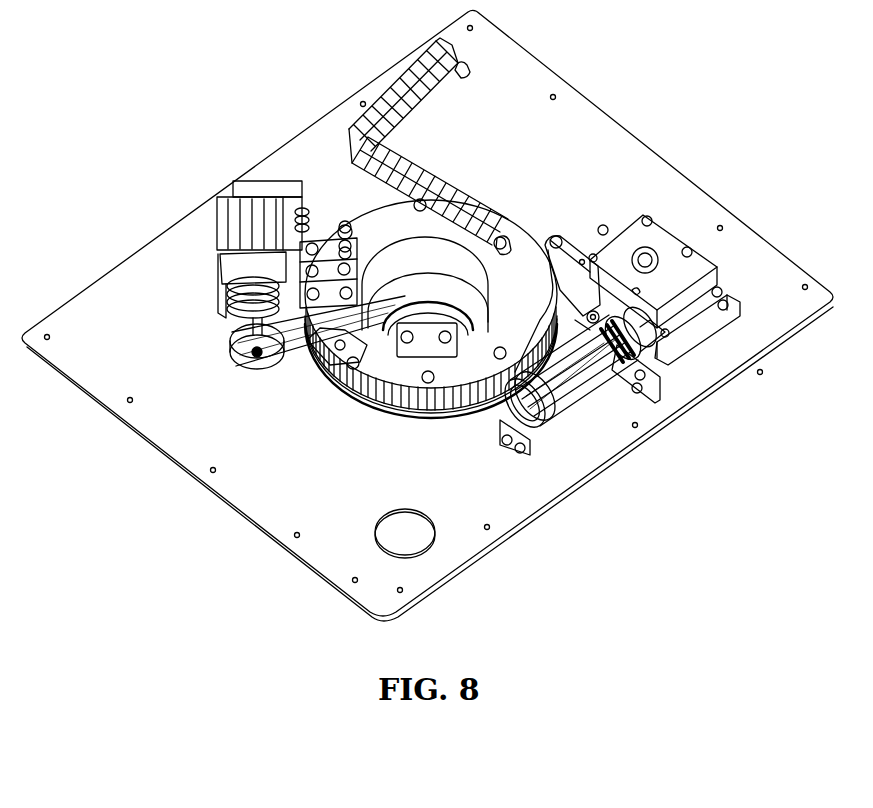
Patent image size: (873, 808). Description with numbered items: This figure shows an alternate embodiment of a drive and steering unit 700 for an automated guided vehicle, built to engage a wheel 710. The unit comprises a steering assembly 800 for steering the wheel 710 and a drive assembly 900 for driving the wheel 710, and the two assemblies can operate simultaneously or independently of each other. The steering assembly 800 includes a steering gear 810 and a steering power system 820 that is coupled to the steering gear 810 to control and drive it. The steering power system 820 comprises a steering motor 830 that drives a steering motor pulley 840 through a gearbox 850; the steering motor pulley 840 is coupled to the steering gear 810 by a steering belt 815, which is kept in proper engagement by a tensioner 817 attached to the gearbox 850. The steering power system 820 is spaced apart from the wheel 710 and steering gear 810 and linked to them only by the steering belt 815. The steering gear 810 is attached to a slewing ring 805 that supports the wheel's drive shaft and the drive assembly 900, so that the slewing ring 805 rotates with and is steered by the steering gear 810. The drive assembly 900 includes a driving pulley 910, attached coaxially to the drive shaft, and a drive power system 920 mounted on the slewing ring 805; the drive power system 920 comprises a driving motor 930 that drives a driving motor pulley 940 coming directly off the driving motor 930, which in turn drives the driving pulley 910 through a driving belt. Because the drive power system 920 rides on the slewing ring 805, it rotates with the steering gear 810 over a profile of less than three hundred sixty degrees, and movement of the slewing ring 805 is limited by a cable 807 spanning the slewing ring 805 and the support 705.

The drive and steering unit 700 is at (116, 134).
The support 705 is at (462, 55).
The wheel 710 is at (458, 258).
The steering assembly 800 is at (726, 206).
The slewing ring 805 is at (355, 402).
The cable 807 is at (410, 163).
The steering gear 810 is at (447, 422).
The steering belt 815 is at (408, 413).
The tensioner 817 is at (568, 232).
The steering power system 820 is at (646, 421).
The steering motor 830 is at (582, 440).
The steering motor pulley 840 is at (647, 253).
The gearbox 850 is at (683, 267).
The drive assembly 900 is at (154, 312).
The driving pulley 910 is at (318, 378).
The drive power system 920 is at (255, 170).
The driving motor 930 is at (215, 220).
The driving motor pulley 940 is at (240, 362).